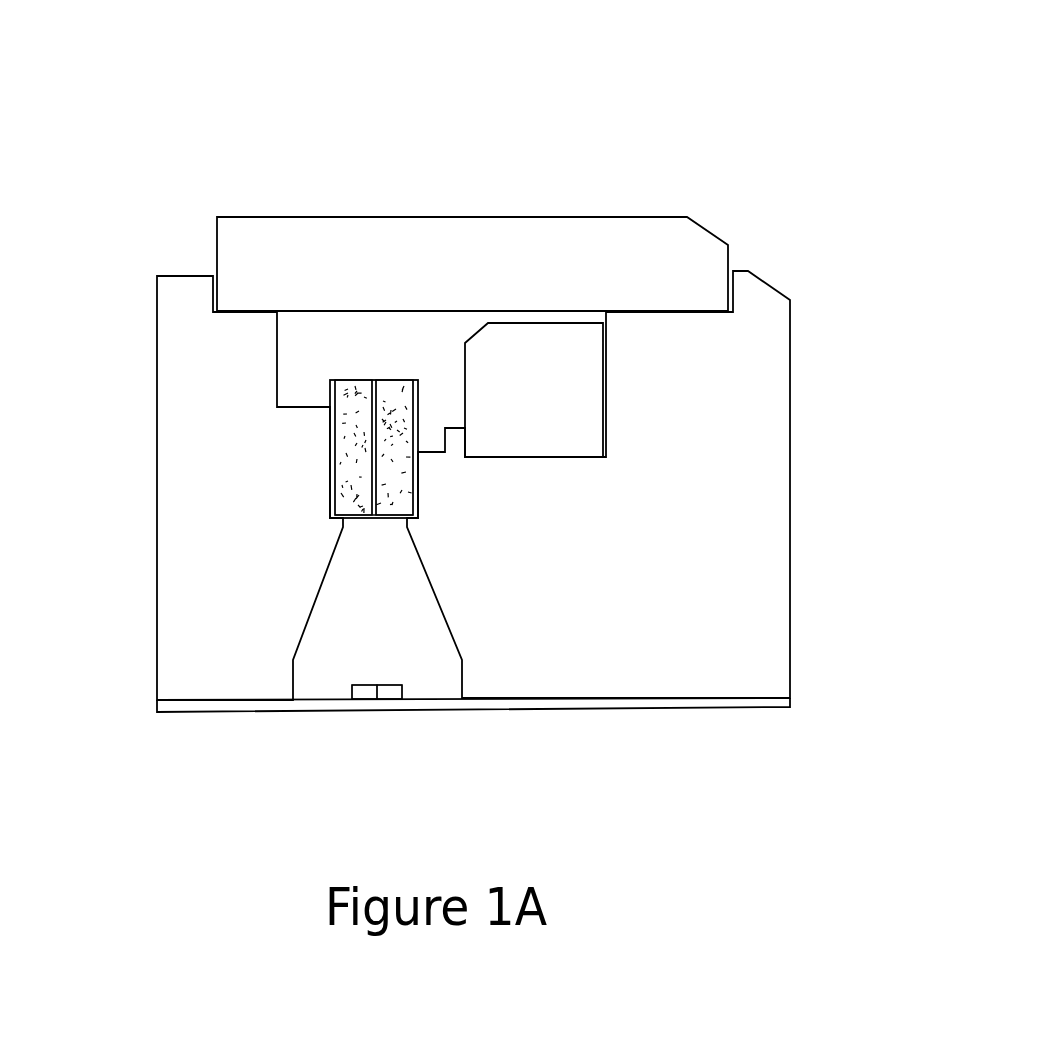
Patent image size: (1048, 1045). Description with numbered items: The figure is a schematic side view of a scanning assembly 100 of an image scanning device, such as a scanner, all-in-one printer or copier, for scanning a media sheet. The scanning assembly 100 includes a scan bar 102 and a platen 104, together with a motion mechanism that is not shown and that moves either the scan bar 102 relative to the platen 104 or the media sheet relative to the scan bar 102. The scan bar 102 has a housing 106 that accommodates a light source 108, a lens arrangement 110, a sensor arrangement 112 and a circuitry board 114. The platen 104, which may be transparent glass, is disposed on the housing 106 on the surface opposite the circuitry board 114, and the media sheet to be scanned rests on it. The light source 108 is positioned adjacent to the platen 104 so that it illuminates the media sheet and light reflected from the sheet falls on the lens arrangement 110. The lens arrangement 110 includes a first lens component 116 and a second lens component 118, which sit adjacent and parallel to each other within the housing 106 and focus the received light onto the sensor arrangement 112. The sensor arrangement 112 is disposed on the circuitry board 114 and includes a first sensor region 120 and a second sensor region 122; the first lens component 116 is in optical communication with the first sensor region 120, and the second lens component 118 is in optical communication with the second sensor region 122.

The scanning assembly 100 is at (817, 143).
The scan bar 102 is at (853, 360).
The platen 104 is at (607, 217).
The housing 106 is at (790, 518).
The light source 108 is at (587, 420).
The lens arrangement 110 is at (375, 379).
The sensor arrangement 112 is at (380, 681).
The circuitry board 114 is at (775, 703).
The first lens component 116 is at (395, 380).
The second lens component 118 is at (352, 380).
The first sensor region 120 is at (390, 693).
The second sensor region 122 is at (367, 693).